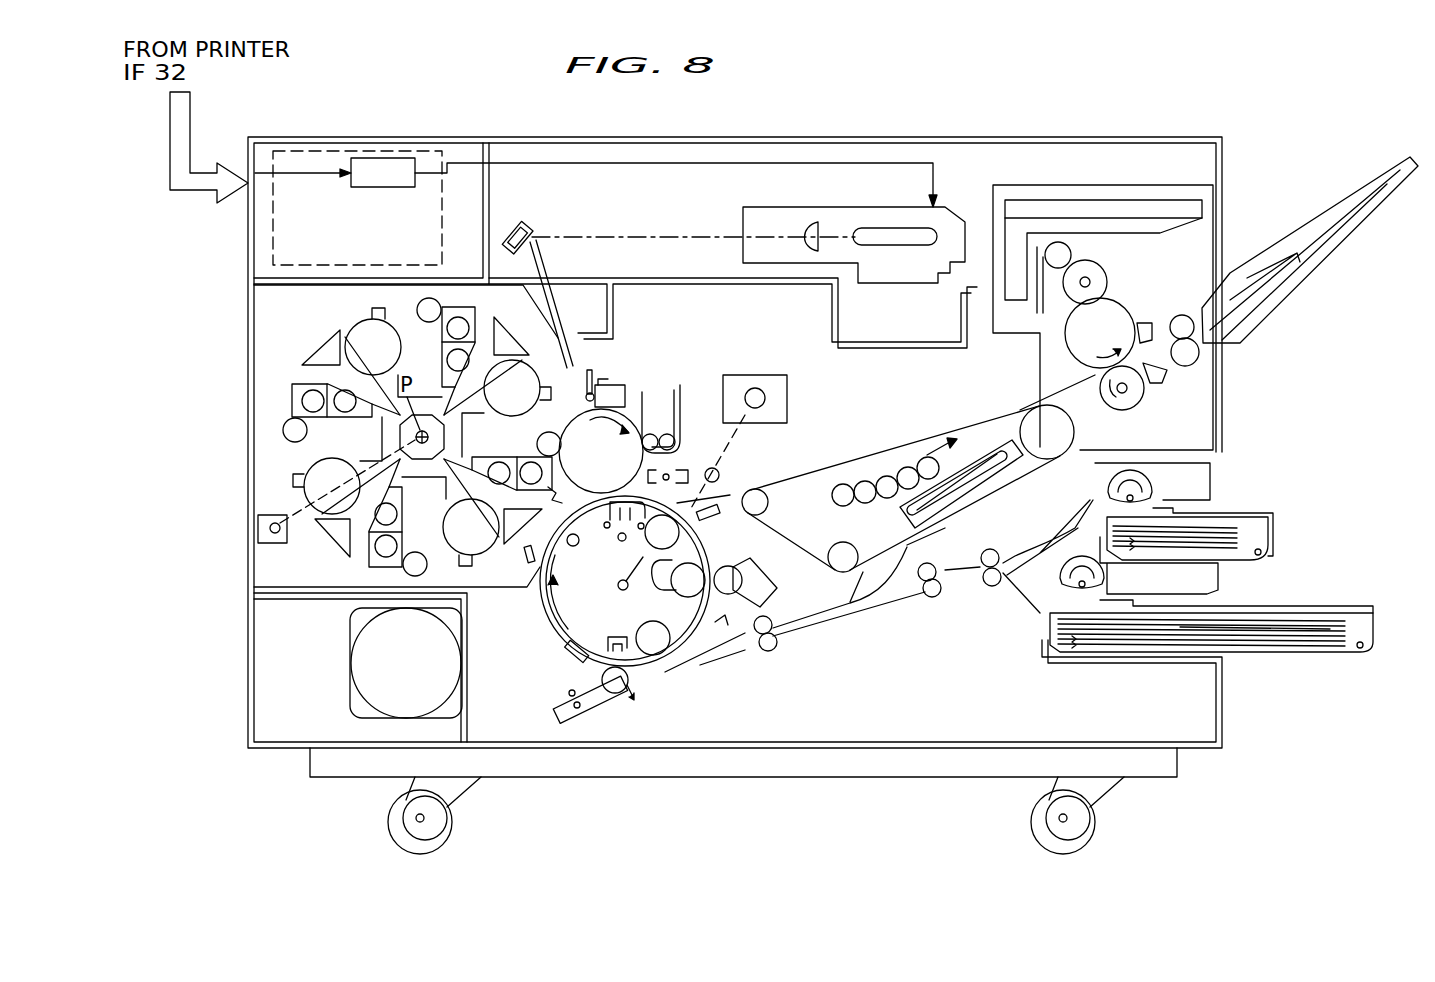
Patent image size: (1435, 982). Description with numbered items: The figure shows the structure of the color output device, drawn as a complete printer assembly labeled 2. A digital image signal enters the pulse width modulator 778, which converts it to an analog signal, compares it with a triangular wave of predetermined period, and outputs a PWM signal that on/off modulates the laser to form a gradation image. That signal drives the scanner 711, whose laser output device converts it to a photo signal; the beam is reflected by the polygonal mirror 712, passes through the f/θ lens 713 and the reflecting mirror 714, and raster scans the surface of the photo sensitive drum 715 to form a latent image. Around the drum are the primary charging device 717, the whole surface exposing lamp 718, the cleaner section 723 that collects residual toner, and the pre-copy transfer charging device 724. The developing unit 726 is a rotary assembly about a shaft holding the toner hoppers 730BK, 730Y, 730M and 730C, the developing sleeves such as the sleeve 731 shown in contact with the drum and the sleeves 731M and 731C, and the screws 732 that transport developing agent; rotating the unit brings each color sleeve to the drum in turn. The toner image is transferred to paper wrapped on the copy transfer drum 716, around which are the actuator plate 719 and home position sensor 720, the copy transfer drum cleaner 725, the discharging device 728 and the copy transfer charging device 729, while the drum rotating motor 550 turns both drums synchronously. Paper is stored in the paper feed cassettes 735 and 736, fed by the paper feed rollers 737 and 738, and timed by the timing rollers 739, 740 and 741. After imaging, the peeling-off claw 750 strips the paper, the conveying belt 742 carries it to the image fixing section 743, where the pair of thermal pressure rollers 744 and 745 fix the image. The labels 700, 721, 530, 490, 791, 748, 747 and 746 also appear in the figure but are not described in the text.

The color printer housing 2 is at (1185, 138).
The printer control unit 700 is at (440, 238).
The pulse width modulator 778 is at (395, 188).
The scanner 711 is at (853, 207).
The polygonal mirror 712 is at (888, 245).
The f/θ lens 713 is at (811, 236).
The reflecting mirror 714 is at (528, 228).
The photo sensitive drum 715 is at (644, 395).
The copy transfer drum 716 is at (625, 581).
The primary charging device 717 is at (626, 383).
The whole surface exposing lamp 718 is at (590, 392).
The actuator plate 719 is at (555, 632).
The home position sensor 720 is at (568, 660).
The cleaner unit 721 is at (604, 703).
The cleaner section 723 is at (672, 432).
The pre-copy transfer charging device 724 is at (527, 550).
The copy transfer drum cleaner 725 is at (728, 567).
The developing unit 726 is at (308, 362).
The discharging device 728 is at (608, 645).
The copy transfer charging device 729 is at (608, 526).
The toner hopper 730BK is at (410, 361).
The toner hopper 730Y is at (498, 425).
The toner hopper 730M is at (434, 513).
The toner hopper 730C is at (303, 484).
The developing sleeve 731 is at (547, 432).
The developing sleeve 731M is at (427, 566).
The developing sleeve 731C is at (283, 429).
The screws 732 is at (461, 326).
The sensor 530 is at (268, 545).
The drum rotating motor 550 is at (768, 375).
The peeling-off claw 750 is at (731, 502).
The paper guide 490 is at (716, 655).
The timing roller 741 is at (778, 650).
The conveying belt 742 is at (826, 480).
The timing roller 740 is at (933, 597).
The timing roller 739 is at (990, 588).
The paper feed roller 738 is at (1062, 596).
The paper feed roller 737 is at (1153, 484).
The paper feed cassette 735 is at (1270, 533).
The paper feed cassette 736 is at (1338, 600).
The paper stack 791 is at (1267, 613).
The fixing heater 748 is at (1127, 218).
The roller 747 is at (1058, 242).
The pressure roller 746 is at (1093, 267).
The thermal pressure roller 745 is at (1113, 312).
The thermal pressure roller 744 is at (1137, 400).
The image fixing section 743 is at (1150, 302).